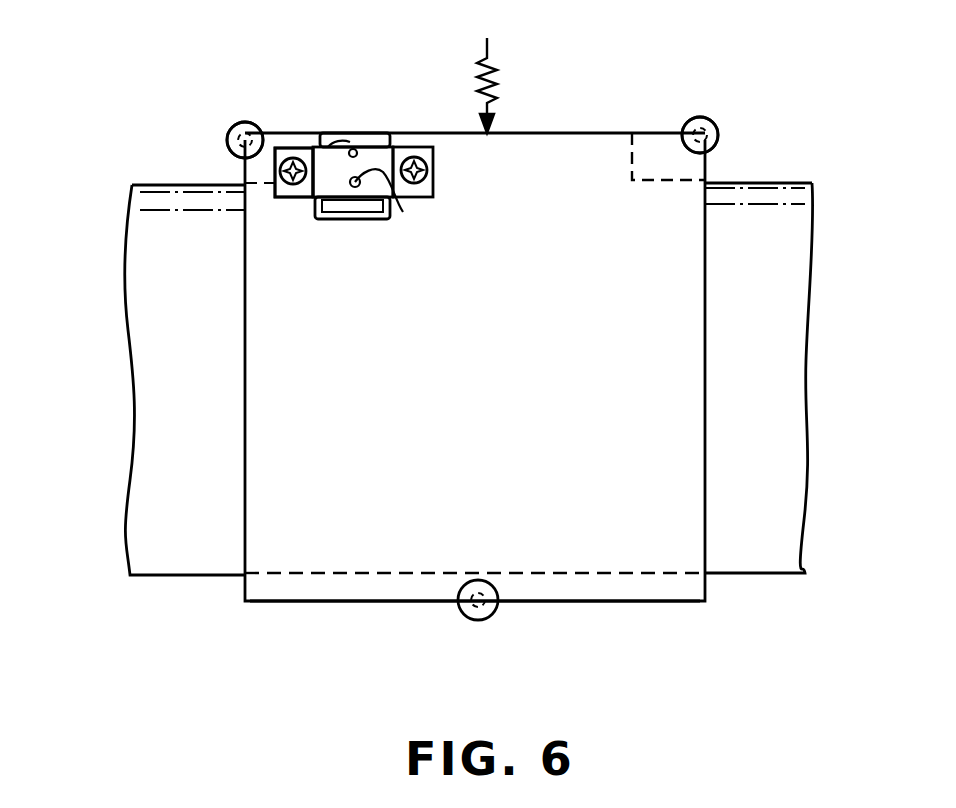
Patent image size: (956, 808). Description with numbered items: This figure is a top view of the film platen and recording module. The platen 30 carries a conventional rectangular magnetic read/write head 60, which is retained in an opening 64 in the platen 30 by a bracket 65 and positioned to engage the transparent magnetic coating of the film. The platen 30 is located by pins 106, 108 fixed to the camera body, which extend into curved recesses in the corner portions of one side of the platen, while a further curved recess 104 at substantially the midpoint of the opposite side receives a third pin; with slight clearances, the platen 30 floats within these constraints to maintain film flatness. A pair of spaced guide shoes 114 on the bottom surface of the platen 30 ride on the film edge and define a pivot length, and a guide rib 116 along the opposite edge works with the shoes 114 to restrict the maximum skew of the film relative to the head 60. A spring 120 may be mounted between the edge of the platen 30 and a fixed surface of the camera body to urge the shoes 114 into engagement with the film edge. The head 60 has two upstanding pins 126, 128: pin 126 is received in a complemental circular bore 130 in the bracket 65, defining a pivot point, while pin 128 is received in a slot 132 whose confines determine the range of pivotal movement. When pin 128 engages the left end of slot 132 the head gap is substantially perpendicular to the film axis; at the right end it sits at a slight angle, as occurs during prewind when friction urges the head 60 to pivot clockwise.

The platen 30 is at (557, 182).
The magnetic read/write head 60 is at (350, 205).
The opening 64 is at (382, 138).
The bracket 65 is at (332, 181).
The curved recess 104 is at (477, 622).
The pin 106 is at (232, 130).
The pin 108 is at (718, 135).
The guide shoes 114 is at (276, 130).
The guide rib 116 is at (305, 604).
The spring 120 is at (498, 90).
The pin 126 is at (348, 145).
The pin 128 is at (350, 184).
The circular bore 130 is at (350, 153).
The slot 132 is at (403, 212).